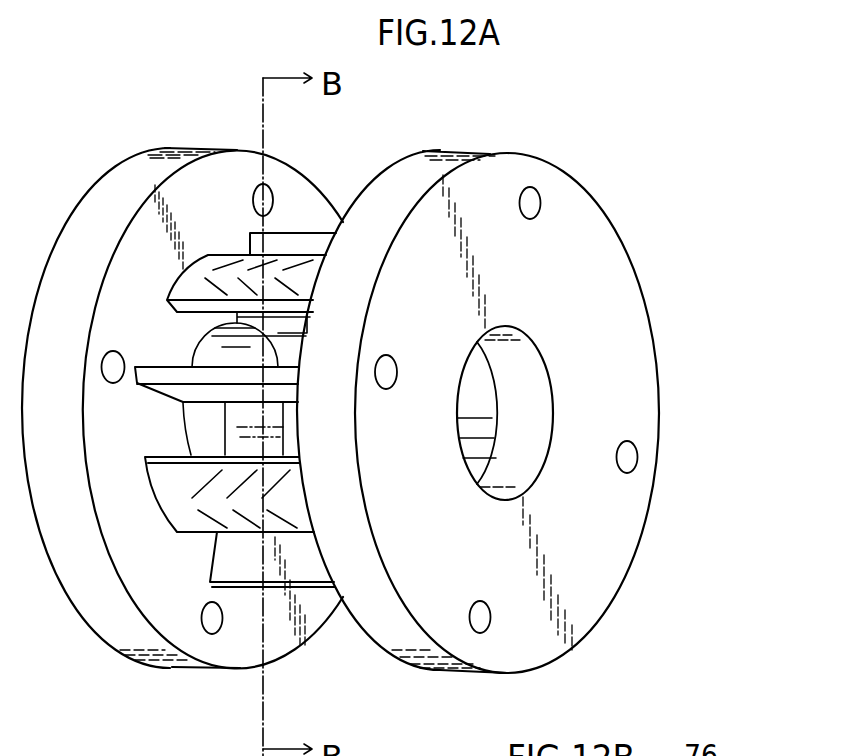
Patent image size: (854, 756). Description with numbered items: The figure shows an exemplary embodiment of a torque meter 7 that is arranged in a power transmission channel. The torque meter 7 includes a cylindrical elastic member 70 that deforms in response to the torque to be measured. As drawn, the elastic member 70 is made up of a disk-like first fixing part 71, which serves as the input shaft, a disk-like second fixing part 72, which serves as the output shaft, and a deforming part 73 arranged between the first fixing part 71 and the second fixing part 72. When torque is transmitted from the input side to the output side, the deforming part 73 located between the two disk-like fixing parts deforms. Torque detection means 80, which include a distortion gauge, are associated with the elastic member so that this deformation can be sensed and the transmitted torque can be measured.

The torque meter 7 is at (726, 224).
The elastic member 70 is at (554, 126).
The first fixing part 71 is at (176, 157).
The second fixing part 72 is at (573, 211).
The deforming part 73 is at (384, 126).
The torque detection means 80 is at (298, 275).